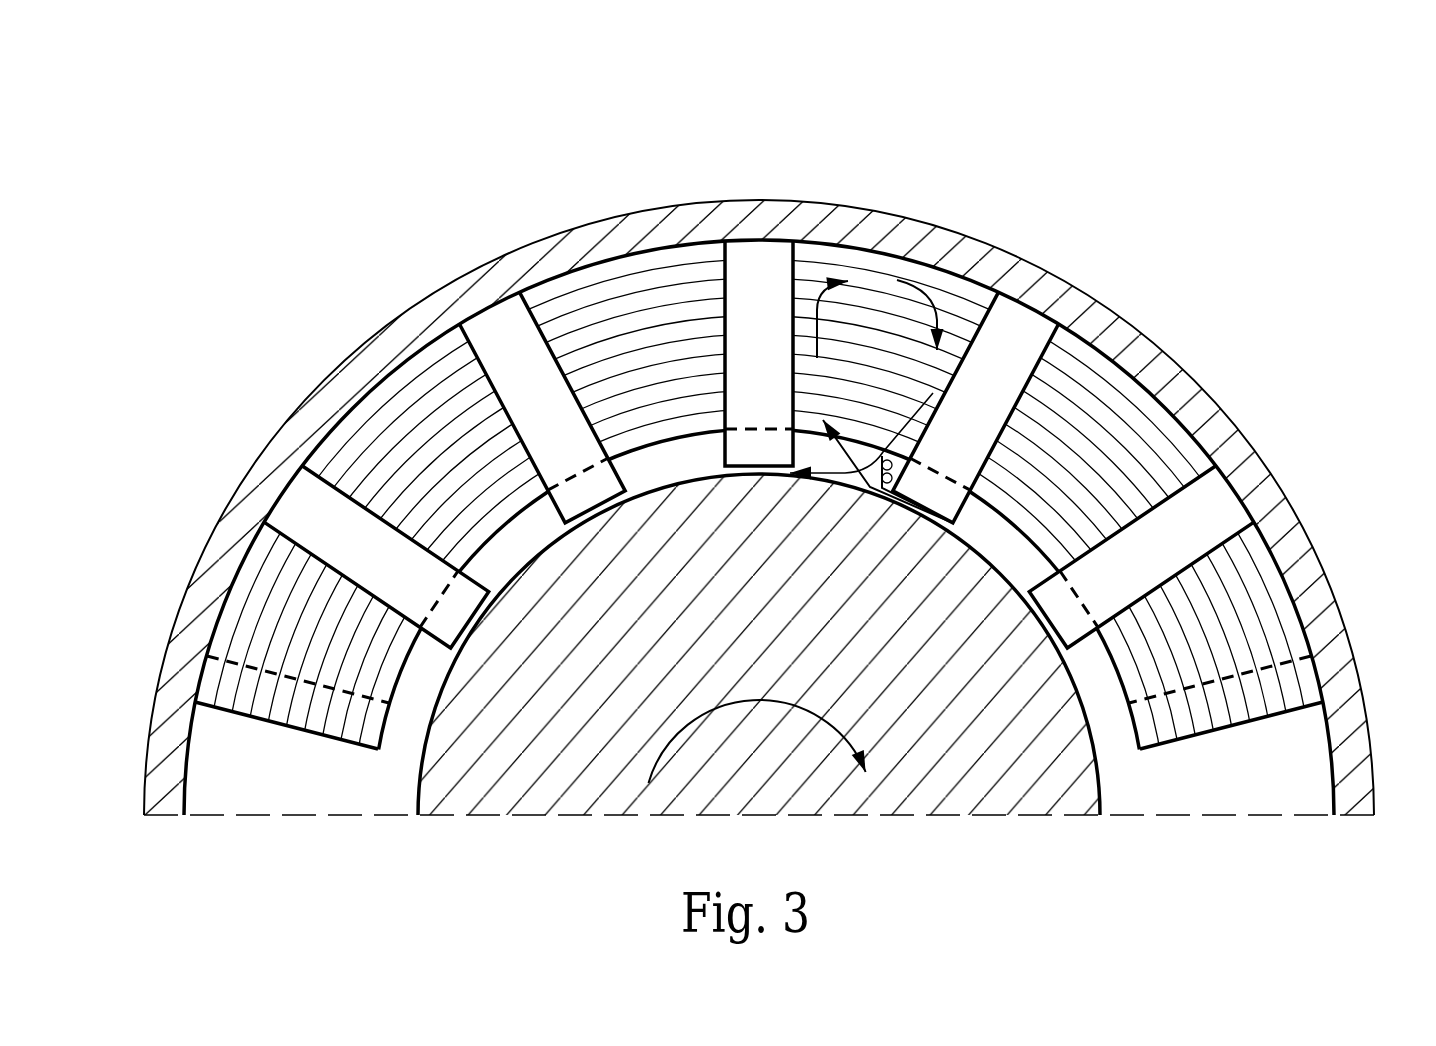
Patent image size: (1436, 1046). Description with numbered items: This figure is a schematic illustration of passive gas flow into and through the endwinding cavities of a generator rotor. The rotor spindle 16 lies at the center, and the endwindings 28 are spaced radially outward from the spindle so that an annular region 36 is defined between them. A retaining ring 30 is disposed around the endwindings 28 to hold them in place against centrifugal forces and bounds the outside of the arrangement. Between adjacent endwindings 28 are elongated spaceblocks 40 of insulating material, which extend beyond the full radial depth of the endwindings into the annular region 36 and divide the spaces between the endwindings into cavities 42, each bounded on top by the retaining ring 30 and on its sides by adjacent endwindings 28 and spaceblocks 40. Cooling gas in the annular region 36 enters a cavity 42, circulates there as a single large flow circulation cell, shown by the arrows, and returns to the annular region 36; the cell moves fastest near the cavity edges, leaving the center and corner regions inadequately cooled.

The rotor spindle 16 is at (890, 789).
The endwindings 28 is at (1252, 726).
The retaining ring 30 is at (1340, 653).
The annular region 36 is at (666, 465).
The spaceblocks 40 is at (762, 262).
The cavities 42 is at (1098, 440).